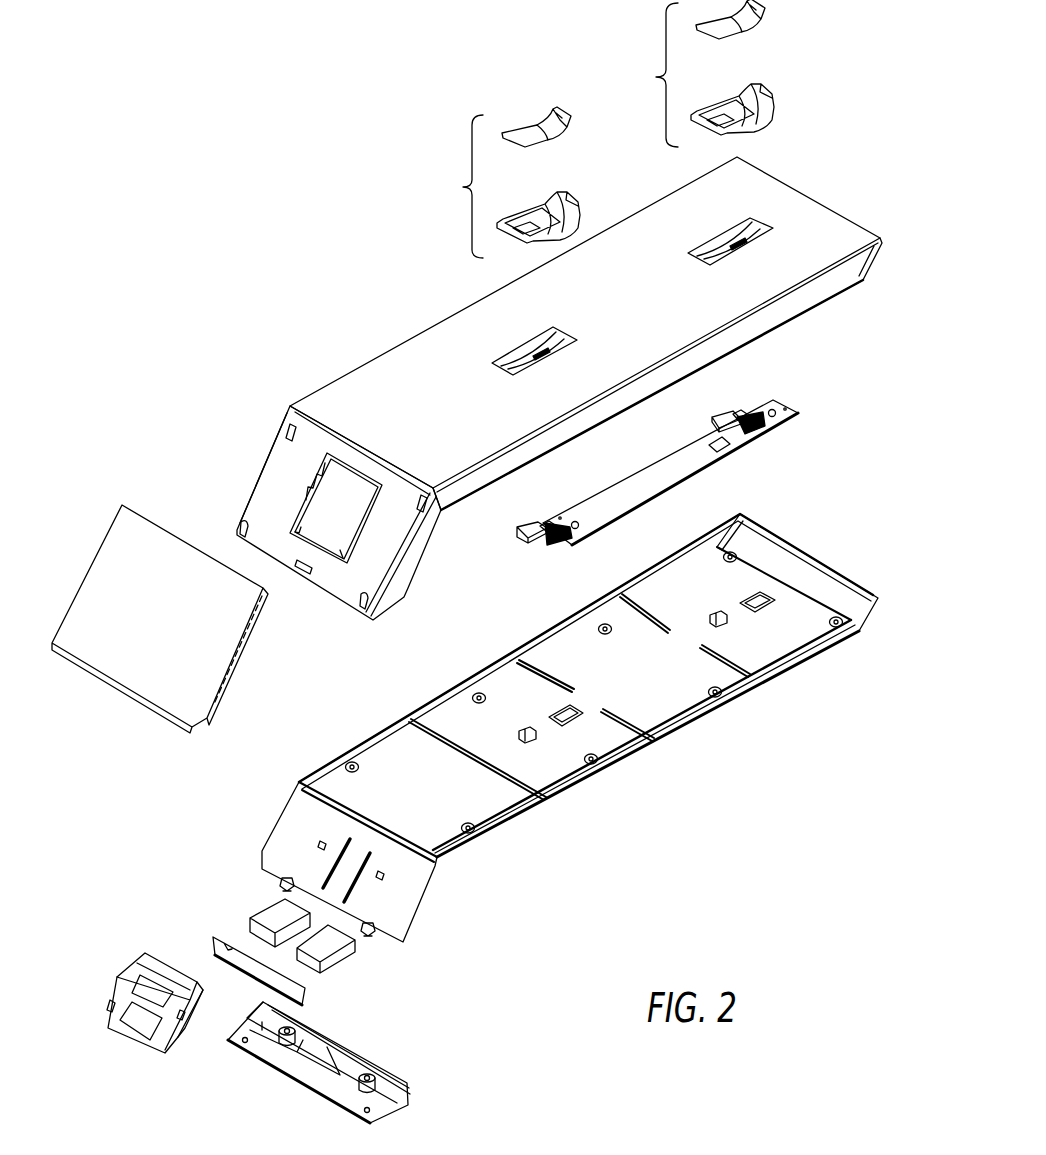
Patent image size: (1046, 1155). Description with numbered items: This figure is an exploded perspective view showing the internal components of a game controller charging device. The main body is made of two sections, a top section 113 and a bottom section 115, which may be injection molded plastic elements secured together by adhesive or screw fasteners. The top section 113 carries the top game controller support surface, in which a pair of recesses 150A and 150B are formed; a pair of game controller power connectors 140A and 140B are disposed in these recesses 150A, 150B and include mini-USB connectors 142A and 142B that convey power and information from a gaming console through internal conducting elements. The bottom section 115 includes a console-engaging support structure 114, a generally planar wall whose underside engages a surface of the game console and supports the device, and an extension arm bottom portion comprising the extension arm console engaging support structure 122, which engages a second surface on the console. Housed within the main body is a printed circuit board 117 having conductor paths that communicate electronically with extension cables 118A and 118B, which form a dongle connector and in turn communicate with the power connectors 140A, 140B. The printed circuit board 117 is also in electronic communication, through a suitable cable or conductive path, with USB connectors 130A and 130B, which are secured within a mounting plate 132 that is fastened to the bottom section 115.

The top section 113 is at (800, 190).
The console-engaging support structure 114 is at (602, 745).
The bottom section 115 is at (740, 690).
The printed circuit board 117 is at (670, 474).
The extension cable 118A is at (752, 431).
The extension cable 118B is at (548, 538).
The extension arm console engaging support structure 122 is at (297, 824).
The USB connector 130A is at (268, 918).
The USB connector 130B is at (337, 963).
The mounting plate 132 is at (378, 1102).
The game controller power connector 140A is at (693, 73).
The game controller power connector 140B is at (499, 182).
The mini-USB connector 142A is at (720, 417).
The mini-USB connector 142B is at (525, 523).
The recess 150A is at (728, 258).
The recess 150B is at (528, 365).